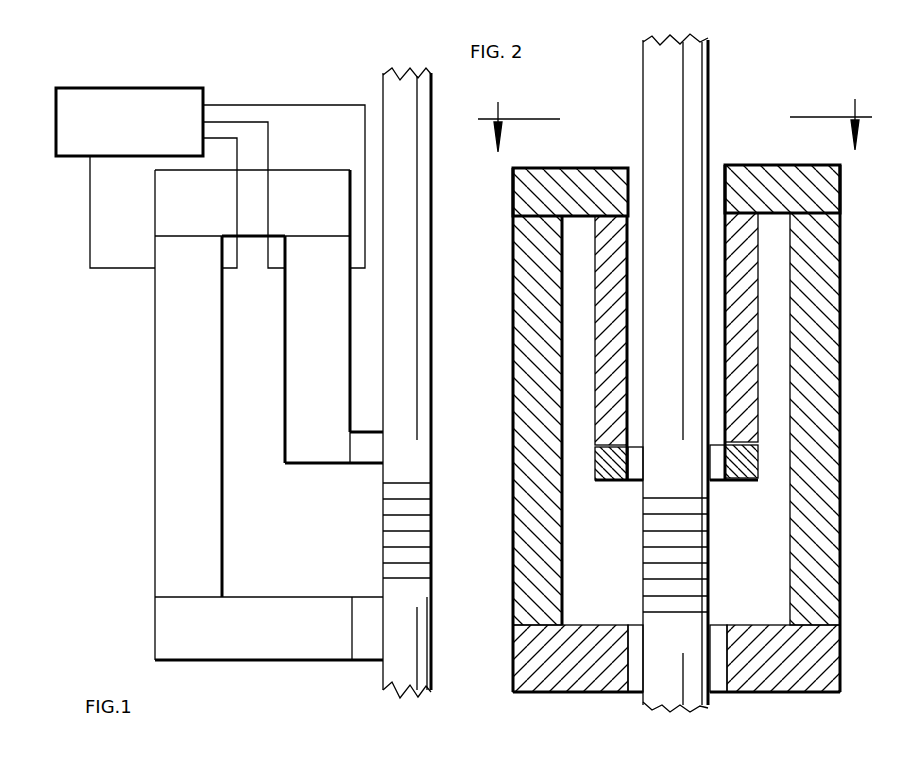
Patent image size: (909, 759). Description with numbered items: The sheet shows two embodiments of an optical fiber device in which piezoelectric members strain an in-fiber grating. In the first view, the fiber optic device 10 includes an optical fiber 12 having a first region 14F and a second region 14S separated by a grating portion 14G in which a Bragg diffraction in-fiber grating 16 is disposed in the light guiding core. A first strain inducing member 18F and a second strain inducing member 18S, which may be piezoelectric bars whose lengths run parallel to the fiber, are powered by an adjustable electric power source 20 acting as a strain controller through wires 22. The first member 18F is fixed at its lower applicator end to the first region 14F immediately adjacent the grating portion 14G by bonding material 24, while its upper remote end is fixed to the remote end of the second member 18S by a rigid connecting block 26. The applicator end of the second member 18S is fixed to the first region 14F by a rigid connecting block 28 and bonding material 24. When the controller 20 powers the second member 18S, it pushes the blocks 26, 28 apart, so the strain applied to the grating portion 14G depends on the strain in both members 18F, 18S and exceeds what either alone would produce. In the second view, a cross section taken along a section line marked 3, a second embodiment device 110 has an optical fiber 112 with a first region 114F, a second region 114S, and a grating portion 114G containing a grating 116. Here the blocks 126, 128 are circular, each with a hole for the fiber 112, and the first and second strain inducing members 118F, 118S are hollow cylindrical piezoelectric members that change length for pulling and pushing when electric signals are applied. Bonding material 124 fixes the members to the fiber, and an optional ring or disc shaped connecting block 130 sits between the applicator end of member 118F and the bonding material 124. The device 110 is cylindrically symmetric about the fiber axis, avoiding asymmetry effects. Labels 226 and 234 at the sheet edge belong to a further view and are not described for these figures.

In FIG. 1, the fiber optic device 10 is at (388, 52).
In FIG. 1, the optical fiber 12 is at (408, 227).
In FIG. 1, the first region 14F is at (405, 342).
In FIG. 1, the grating portion 14G is at (437, 487).
In FIG. 1, the second region 14S is at (433, 595).
In FIG. 1, the Bragg diffraction in-fiber grating 16 is at (350, 523).
In FIG. 1, the first strain inducing member 18F is at (330, 316).
In FIG. 1, the second strain inducing member 18S is at (173, 428).
In FIG. 1, the adjustable electric power source 20 is at (107, 88).
In FIG. 1, the wires 22 is at (218, 137).
In FIG. 1, the bonding material 24 is at (368, 452).
In FIG. 1, the connecting block 26 is at (333, 203).
In FIG. 1, the connecting block 28 is at (157, 628).
In FIG. 2, the section line 3- 3 is at (675, 122).
In FIG. 2, the second embodiment device 110 is at (612, 97).
In FIG. 2, the optical fiber 112 is at (688, 70).
In FIG. 2, the first region 114F is at (670, 200).
In FIG. 2, the grating portion 114G is at (706, 528).
In FIG. 2, the second region 114S is at (670, 688).
In FIG. 2, the grating 116 is at (643, 557).
In FIG. 2, the first strain inducing member 118F is at (600, 350).
In FIG. 2, the second strain inducing member 118S is at (540, 418).
In FIG. 2, the bonding material 124 is at (636, 470).
In FIG. 2, the connecting block 126 is at (743, 172).
In FIG. 2, the connecting block 128 is at (777, 677).
In FIG. 2, the ring or disc shaped connecting block 130 is at (594, 468).
In FIG. 1, the top plate (FIG. 3) 226 is at (415, 748).
In FIG. 1, the housing (FIG. 3) 234 is at (217, 758).